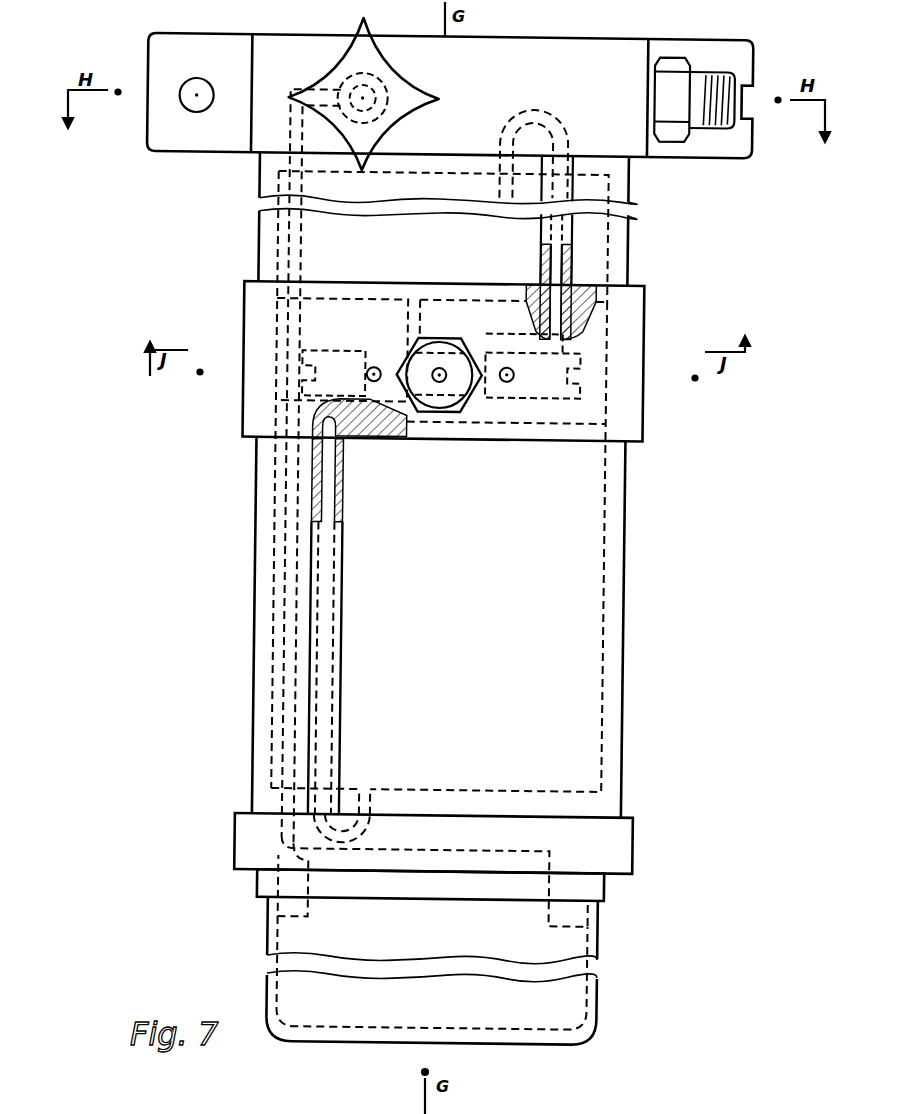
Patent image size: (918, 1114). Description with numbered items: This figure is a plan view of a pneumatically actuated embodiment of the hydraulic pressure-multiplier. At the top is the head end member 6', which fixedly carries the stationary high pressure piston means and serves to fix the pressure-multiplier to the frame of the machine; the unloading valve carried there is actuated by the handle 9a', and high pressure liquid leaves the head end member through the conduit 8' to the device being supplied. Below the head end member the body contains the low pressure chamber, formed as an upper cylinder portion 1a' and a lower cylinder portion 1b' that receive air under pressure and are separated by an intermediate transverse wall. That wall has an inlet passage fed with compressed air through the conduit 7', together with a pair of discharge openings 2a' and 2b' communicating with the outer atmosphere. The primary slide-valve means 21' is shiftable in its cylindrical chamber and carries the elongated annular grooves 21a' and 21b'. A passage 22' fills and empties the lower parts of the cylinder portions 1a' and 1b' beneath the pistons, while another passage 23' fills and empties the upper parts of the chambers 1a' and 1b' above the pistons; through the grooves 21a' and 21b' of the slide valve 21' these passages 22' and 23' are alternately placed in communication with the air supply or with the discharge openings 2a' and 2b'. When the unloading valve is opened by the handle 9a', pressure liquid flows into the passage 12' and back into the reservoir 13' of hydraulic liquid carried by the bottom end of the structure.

The head end member 6' is at (449, 155).
The handle 9a' is at (360, 427).
The conduit 8' is at (695, 74).
The upper low pressure cylinder portion 1a' is at (461, 472).
The passage 23' is at (536, 310).
The passage 22' is at (359, 574).
The conduit 7' is at (439, 359).
The primary slide-valve means 21' is at (441, 361).
The elongated annular groove 21a' is at (345, 361).
The elongated annular groove 21b' is at (532, 377).
The discharge opening 2a' is at (342, 348).
The discharge opening 2b' is at (555, 352).
The passage 12' is at (419, 626).
The lower low pressure cylinder portion 1b' is at (518, 546).
The reservoir 13' is at (432, 971).